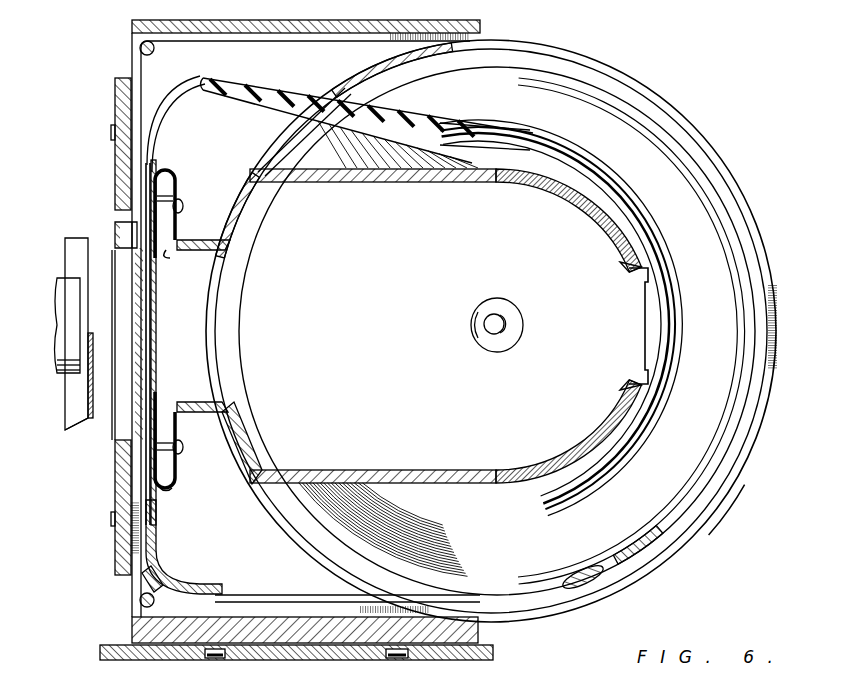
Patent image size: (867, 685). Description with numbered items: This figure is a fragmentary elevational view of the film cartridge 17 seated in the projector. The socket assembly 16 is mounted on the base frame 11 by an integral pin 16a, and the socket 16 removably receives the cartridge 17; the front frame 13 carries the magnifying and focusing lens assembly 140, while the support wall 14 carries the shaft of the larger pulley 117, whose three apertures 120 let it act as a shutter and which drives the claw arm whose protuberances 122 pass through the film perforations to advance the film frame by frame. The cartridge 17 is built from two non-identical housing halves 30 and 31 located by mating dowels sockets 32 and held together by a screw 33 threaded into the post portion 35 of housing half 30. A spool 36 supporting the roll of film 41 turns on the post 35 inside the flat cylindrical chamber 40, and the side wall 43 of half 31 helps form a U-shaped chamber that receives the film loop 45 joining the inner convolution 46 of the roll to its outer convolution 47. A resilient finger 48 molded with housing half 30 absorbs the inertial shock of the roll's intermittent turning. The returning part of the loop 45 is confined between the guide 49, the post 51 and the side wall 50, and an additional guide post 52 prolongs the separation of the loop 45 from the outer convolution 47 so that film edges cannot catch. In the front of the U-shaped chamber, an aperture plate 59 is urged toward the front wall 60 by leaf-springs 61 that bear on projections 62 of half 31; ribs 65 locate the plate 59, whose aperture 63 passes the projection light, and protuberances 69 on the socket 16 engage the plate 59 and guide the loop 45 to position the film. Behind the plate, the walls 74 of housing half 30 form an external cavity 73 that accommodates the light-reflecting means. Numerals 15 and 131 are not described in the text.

The base frame 11 is at (114, 645).
The front frame 13 is at (145, 0).
The support wall 14 is at (532, 4).
The section line 15 is at (112, 203).
The socket assembly 16 is at (344, 19).
The integral pin 16a is at (214, 658).
The film cartridge 17 is at (96, 350).
The housing half 30 is at (428, 470).
The housing half 31 is at (614, 58).
The mating dowels sockets 32 is at (140, 47).
The screw 33 is at (506, 318).
The post portion 35 is at (522, 333).
The spool 36 is at (615, 425).
The flat cylindrical chamber 40 is at (759, 413).
The roll of film 41 is at (662, 157).
The side wall 43 is at (367, 118).
The film loop 45 is at (198, 76).
The inner convolution 46 is at (473, 130).
The outer convolution 47 is at (638, 540).
The resilient finger 48 is at (222, 94).
The guide 49 is at (165, 550).
The side wall 50 is at (270, 610).
The post 51 is at (150, 583).
The guide post 52 is at (583, 588).
The aperture plate 59 is at (172, 490).
The front wall 60 is at (142, 110).
The leaf-springs 61 is at (168, 250).
The projections 62 is at (232, 247).
The aperture 63 is at (148, 338).
The ribs 65 is at (178, 200).
The protuberances 69 is at (158, 262).
The external cavity 73 is at (400, 292).
The walls 74 is at (372, 183).
The pulley 117 is at (68, 415).
The apertures 120 is at (118, 262).
The protuberances 122 is at (130, 247).
The lead 131 is at (140, 333).
The lens assembly 140 is at (60, 352).